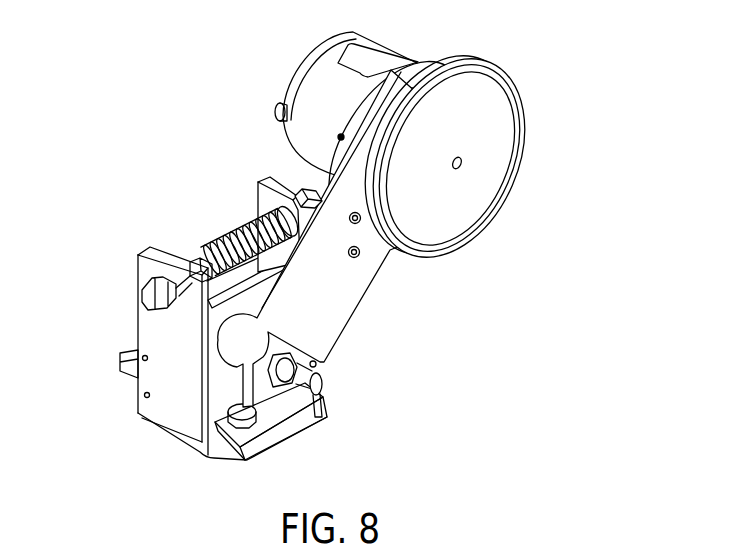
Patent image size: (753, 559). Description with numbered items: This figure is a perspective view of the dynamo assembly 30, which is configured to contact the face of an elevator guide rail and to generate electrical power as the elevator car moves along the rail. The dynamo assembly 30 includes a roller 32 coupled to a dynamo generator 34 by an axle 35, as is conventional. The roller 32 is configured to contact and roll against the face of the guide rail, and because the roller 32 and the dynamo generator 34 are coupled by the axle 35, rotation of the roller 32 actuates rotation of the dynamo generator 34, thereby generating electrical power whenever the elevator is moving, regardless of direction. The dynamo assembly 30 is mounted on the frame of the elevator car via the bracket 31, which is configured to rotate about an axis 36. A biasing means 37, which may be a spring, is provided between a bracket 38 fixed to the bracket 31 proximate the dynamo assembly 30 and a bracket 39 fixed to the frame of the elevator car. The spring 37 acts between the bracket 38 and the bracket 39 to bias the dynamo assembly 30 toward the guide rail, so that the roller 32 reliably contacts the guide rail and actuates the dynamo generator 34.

The dynamo assembly 30 is at (361, 242).
The bracket 31 is at (350, 321).
The roller 32 is at (513, 83).
The dynamo generator 34 is at (363, 38).
The axle 35 is at (461, 165).
The axis 36 is at (326, 386).
The biasing means 37 is at (230, 237).
The bracket 38 is at (260, 183).
The bracket 39 is at (175, 406).